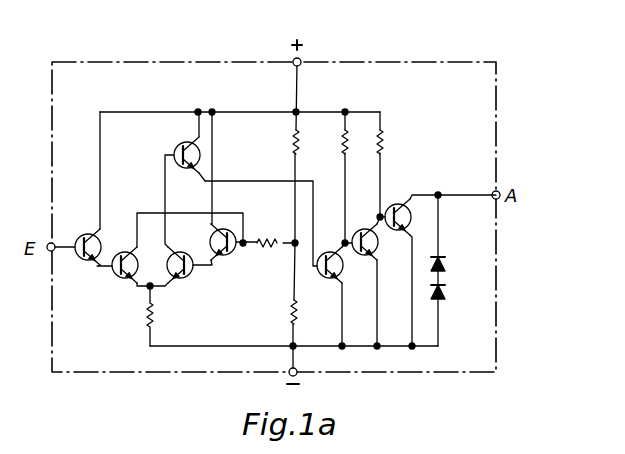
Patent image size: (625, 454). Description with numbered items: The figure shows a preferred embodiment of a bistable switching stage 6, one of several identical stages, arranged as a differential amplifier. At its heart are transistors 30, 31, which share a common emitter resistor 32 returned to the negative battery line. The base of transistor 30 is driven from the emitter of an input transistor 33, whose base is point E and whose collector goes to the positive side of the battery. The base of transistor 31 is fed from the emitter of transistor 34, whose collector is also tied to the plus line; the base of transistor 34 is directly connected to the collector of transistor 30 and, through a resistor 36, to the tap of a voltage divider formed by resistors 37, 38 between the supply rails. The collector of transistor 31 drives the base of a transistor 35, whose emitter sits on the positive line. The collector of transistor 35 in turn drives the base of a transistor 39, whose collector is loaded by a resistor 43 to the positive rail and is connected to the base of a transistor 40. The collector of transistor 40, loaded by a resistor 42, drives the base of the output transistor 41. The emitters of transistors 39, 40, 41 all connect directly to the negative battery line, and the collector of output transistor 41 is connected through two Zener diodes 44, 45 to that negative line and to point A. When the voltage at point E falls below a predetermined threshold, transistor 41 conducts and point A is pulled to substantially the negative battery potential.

The switching stage 6 is at (415, 65).
The transistor 30 is at (112, 277).
The transistor 31 is at (188, 278).
The common emitter resistor 32 is at (155, 318).
The input transistor 33 is at (82, 236).
The transistor 34 is at (229, 257).
The transistor 35 is at (177, 146).
The resistor 36 is at (280, 250).
The resistor 37 is at (291, 145).
The resistor 38 is at (298, 318).
The transistor 39 is at (343, 269).
The transistor 40 is at (356, 228).
The output transistor 41 is at (394, 201).
The resistor 42 is at (385, 137).
The resistor 43 is at (346, 131).
The Zener diode 44 is at (443, 266).
The Zener diode 45 is at (443, 296).